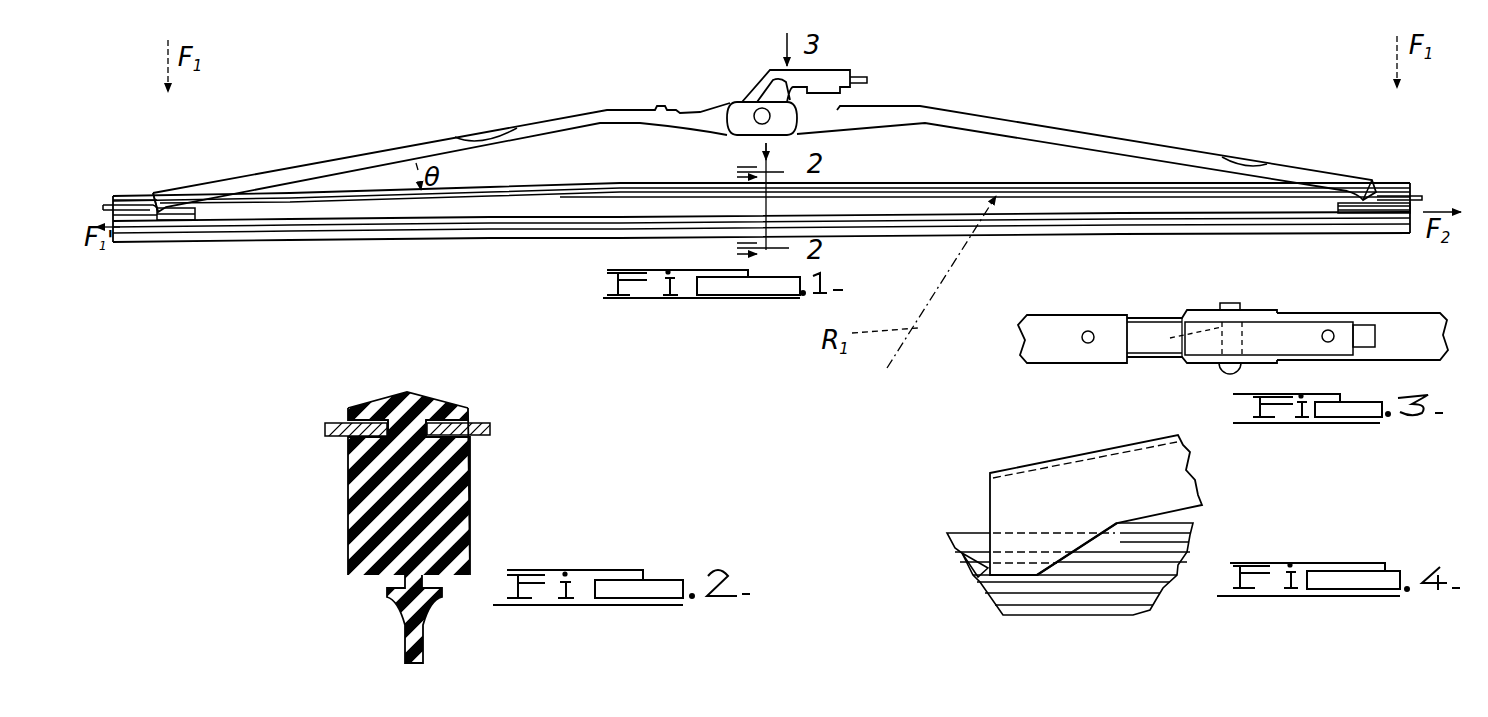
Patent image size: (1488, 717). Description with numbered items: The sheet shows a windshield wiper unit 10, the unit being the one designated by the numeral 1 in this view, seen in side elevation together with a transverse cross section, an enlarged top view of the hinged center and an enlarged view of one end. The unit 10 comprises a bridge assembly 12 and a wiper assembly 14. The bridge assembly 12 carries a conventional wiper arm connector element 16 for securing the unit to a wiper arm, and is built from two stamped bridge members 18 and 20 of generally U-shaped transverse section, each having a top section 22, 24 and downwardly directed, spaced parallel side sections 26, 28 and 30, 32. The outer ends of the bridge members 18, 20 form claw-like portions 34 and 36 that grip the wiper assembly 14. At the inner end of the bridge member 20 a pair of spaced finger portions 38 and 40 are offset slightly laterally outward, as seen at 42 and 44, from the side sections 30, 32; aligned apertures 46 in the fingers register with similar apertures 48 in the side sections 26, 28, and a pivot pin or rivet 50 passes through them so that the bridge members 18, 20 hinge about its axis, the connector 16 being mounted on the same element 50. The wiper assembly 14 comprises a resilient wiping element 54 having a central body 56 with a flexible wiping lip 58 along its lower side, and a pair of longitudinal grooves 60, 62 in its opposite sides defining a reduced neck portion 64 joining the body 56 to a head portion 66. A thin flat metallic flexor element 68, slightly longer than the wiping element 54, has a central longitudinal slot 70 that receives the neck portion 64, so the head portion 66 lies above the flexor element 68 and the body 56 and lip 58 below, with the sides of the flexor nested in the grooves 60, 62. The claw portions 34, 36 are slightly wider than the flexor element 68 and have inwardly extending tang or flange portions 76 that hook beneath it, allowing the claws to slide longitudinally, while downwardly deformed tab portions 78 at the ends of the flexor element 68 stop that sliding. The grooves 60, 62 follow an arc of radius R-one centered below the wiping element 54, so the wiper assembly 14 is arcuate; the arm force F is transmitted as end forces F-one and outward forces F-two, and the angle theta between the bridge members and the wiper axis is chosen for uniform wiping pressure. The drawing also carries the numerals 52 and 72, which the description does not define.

In FIG. 1, the wiper blade assembly 1 is at (167, 190).
In FIG. 1, the windshield wiper unit 10 is at (762, 164).
In FIG. 1, the bridge assembly 12 is at (752, 159).
In FIG. 1, the wiper assembly 14 is at (559, 243).
In FIG. 1, the wiper arm connector element 16 is at (842, 71).
In FIG. 1, the bridge member 18 is at (1099, 138).
In FIG. 3, the bridge member 18 is at (1316, 330).
In FIG. 1, the bridge member 20 is at (416, 179).
In FIG. 3, the bridge member 20 is at (1100, 314).
In FIG. 1, the top section 22 is at (1243, 158).
In FIG. 1, the top section 24 is at (483, 133).
In FIG. 4, the top section 24 is at (1170, 486).
In FIG. 1, the side section 26 is at (1085, 143).
In FIG. 3, the side section 26 is at (1300, 360).
In FIG. 1, the side section 28 is at (1230, 170).
In FIG. 3, the side section 28 is at (1300, 312).
In FIG. 1, the side section 30 is at (577, 128).
In FIG. 3, the side section 30 is at (1137, 360).
In FIG. 1, the side section 32 is at (505, 147).
In FIG. 3, the side section 32 is at (1138, 318).
In FIG. 1, the claw-like portion 34 is at (1372, 182).
In FIG. 1, the claw-like portion 36 is at (160, 194).
In FIG. 4, the claw-like portion 36 is at (1053, 576).
In FIG. 3, the finger portion 38 is at (1270, 308).
In FIG. 3, the finger portion 40 is at (1193, 330).
In FIG. 3, the latch tab 42 is at (1226, 302).
In FIG. 3, the lateral offset 44 is at (1162, 365).
In FIG. 3, the aperture 46 is at (1246, 310).
In FIG. 3, the aperture 48 is at (1226, 306).
In FIG. 1, the connecting element 50 is at (755, 114).
In FIG. 3, the connecting element 50 is at (1225, 373).
In FIG. 3, the arm end within connector 52 is at (1185, 336).
In FIG. 2, the wiping element 54 is at (443, 431).
In FIG. 2, the body 56 is at (347, 490).
In FIG. 2, the wiping lip 58 is at (414, 635).
In FIG. 2, the groove 60 is at (462, 426).
In FIG. 2, the groove 62 is at (345, 424).
In FIG. 2, the neck portion 64 is at (432, 430).
In FIG. 2, the head portion 66 is at (410, 430).
In FIG. 2, the flexor element 68 is at (492, 427).
In FIG. 2, the slot 70 is at (406, 393).
In FIG. 1, the end tab 72 is at (160, 214).
In FIG. 4, the tang or flange portion 76 is at (1032, 565).
In FIG. 4, the tab portion 78 is at (962, 566).